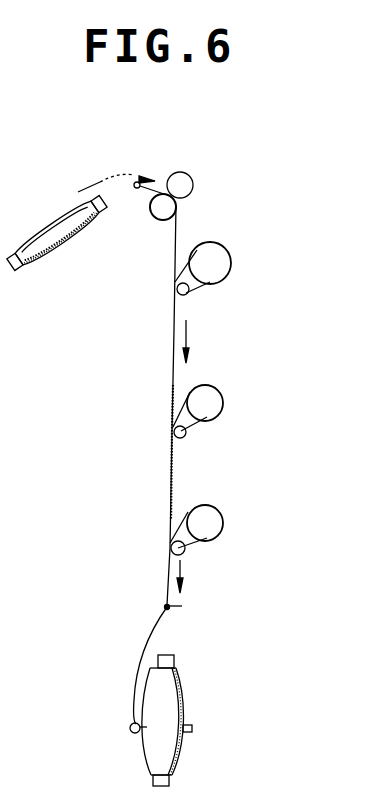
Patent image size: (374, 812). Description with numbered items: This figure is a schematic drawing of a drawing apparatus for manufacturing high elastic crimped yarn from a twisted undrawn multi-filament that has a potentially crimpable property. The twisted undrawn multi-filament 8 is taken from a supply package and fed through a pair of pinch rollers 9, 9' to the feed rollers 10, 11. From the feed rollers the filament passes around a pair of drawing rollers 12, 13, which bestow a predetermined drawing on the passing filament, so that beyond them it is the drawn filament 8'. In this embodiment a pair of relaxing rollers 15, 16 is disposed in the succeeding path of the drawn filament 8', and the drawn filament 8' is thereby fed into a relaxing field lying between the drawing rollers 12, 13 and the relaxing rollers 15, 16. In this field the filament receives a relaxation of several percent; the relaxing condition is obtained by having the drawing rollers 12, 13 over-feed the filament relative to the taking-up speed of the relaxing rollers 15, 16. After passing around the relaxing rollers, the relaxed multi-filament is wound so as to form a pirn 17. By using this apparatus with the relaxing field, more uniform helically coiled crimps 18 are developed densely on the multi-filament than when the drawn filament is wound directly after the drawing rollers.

The twisted undrawn multi-filament 8 is at (80, 222).
The drawn filament 8' is at (217, 444).
The pinch roller 9 is at (204, 182).
The pinch roller 9' is at (145, 216).
The feed roller 10 is at (222, 262).
The feed roller 11 is at (186, 293).
The drawing roller 12 is at (210, 408).
The drawing roller 13 is at (185, 437).
The relaxing roller 15 is at (215, 526).
The relaxing roller 16 is at (185, 553).
The pirn 17 is at (185, 700).
The helically coiled crimps 18 is at (174, 483).